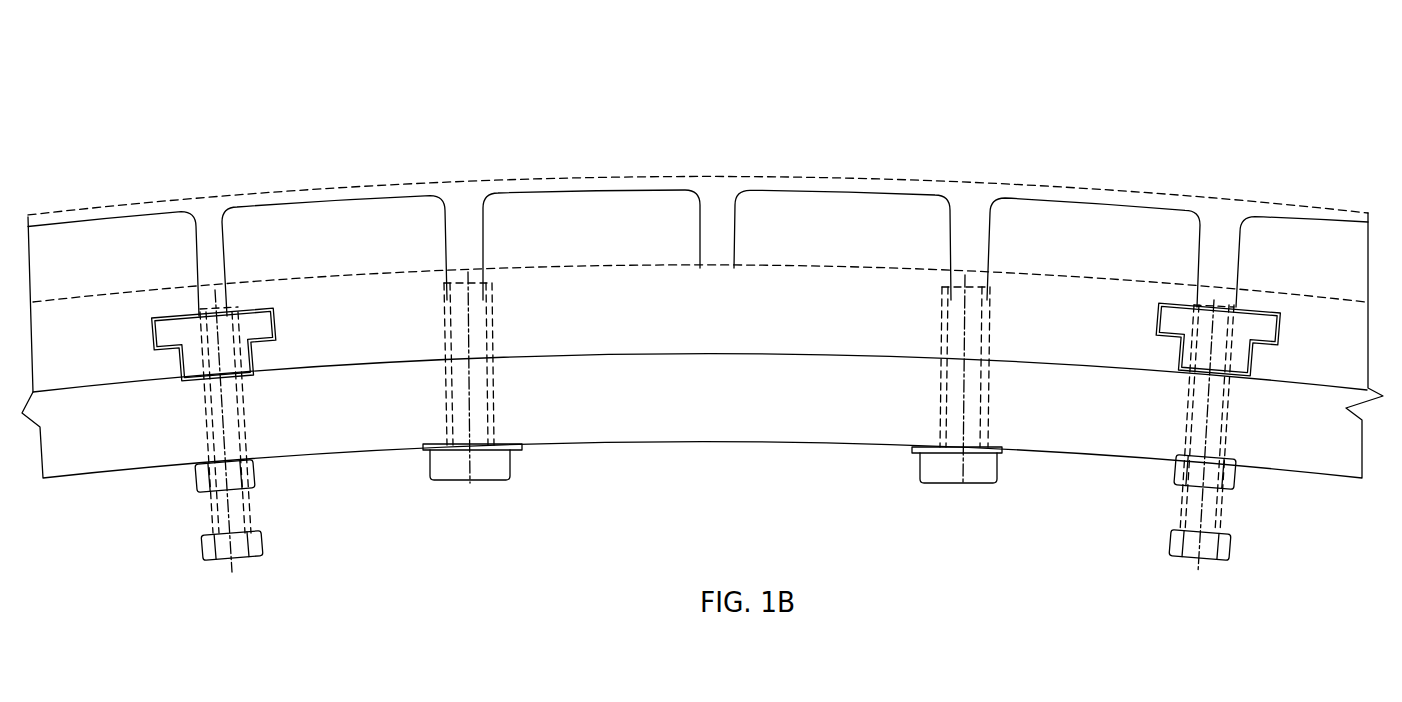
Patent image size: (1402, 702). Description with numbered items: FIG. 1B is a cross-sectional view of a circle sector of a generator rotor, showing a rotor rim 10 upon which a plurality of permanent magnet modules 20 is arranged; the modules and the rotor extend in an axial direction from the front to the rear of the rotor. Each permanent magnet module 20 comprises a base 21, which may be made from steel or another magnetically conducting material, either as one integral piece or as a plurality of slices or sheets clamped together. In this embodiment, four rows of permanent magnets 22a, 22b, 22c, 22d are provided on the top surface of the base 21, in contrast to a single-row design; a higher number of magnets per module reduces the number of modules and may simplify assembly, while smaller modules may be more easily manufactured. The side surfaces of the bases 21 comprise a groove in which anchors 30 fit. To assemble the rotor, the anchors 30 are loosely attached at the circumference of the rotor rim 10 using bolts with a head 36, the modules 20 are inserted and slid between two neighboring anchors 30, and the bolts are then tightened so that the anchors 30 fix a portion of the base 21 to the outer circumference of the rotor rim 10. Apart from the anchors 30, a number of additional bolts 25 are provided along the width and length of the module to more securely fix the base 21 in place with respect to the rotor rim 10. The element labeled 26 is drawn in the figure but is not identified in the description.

The rotor rim 10 is at (363, 408).
The permanent magnet module 20 is at (579, 60).
The base 21 is at (684, 340).
The row of permanent magnets 22a is at (357, 263).
The row of permanent magnets 22b is at (533, 241).
The row of permanent magnets 22c is at (838, 233).
The row of permanent magnets 22d is at (1087, 240).
The additional bolt 25 is at (513, 466).
The end bracket segment 26 is at (128, 207).
The anchor 30 is at (250, 308).
The head 36 is at (205, 472).